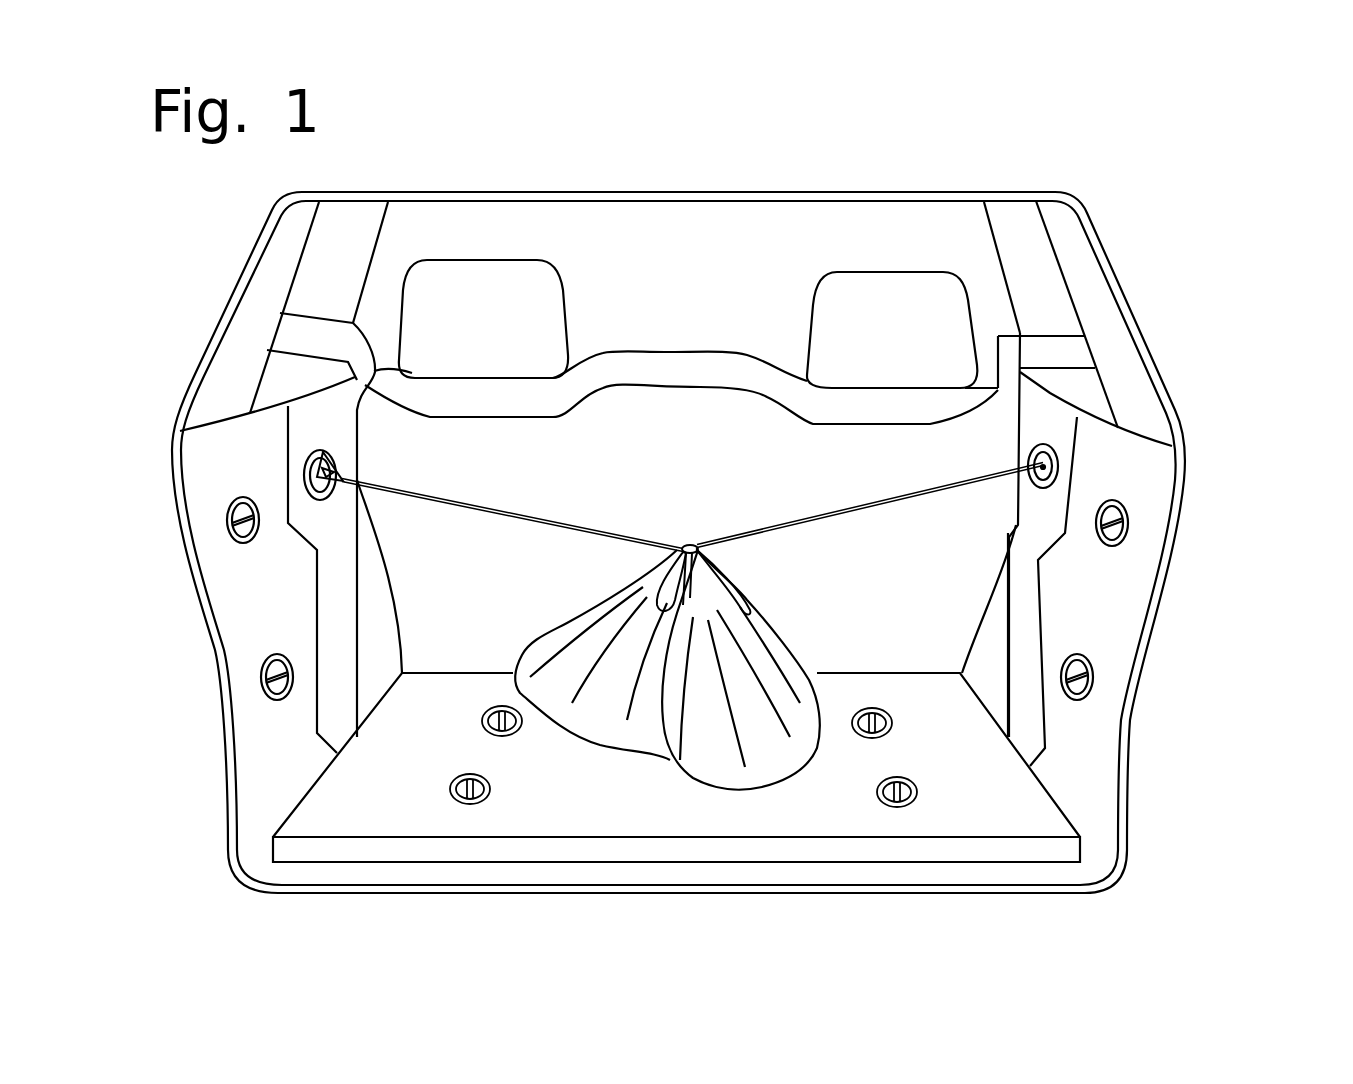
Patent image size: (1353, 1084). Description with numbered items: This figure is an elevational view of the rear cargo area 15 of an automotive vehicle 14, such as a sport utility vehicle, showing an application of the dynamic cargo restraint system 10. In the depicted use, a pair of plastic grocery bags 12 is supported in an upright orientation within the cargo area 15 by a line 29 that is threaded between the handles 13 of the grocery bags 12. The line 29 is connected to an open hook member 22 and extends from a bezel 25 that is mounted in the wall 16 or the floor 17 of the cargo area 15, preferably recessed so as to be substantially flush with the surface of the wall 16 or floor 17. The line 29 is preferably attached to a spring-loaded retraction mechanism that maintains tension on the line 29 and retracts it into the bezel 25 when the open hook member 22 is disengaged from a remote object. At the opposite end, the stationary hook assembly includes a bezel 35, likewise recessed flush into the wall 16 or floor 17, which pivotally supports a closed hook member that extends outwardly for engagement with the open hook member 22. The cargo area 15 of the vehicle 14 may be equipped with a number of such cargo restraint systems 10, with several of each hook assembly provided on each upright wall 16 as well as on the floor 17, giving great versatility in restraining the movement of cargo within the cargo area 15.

The cargo restraint system 10 is at (1093, 807).
The plastic grocery bags 12 is at (797, 653).
The handles 13 is at (667, 570).
The automotive vehicle 14 is at (638, 192).
The cargo area 15 is at (793, 228).
The wall 16 is at (240, 627).
The floor 17 is at (788, 813).
The open hook member 22 is at (327, 453).
The bezel 25 is at (1036, 458).
The line 29 is at (837, 518).
The bezel 35 is at (317, 500).